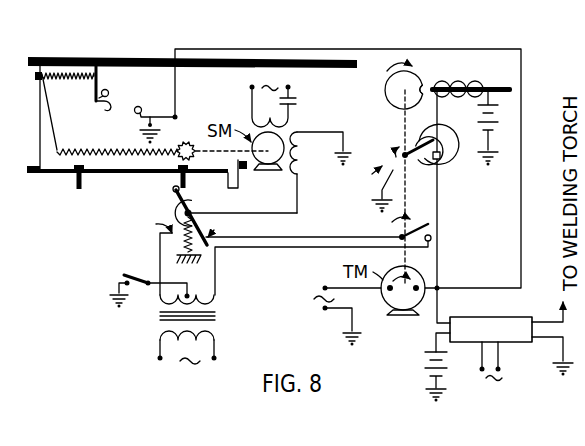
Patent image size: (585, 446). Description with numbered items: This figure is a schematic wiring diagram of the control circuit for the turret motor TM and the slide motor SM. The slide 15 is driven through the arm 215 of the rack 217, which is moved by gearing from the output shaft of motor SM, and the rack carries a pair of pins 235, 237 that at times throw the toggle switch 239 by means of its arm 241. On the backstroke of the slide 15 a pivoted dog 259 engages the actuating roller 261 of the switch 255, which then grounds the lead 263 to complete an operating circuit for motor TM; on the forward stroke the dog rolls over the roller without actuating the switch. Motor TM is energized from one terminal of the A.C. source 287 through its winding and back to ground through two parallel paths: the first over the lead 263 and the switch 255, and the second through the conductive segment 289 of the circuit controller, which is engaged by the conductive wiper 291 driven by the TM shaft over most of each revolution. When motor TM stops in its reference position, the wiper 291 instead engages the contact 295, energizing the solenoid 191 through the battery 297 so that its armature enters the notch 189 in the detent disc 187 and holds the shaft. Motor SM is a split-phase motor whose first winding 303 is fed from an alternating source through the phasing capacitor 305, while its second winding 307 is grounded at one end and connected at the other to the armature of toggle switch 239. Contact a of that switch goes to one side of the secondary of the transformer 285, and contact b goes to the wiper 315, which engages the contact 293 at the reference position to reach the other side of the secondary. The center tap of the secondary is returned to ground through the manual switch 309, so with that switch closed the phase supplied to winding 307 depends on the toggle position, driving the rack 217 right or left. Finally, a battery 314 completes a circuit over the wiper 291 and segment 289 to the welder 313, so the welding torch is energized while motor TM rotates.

The slide 15 is at (133, 58).
The lead 263 is at (242, 50).
The actuating roller 261 is at (141, 108).
The switch 255 is at (160, 110).
The pivoted dog 259 is at (103, 110).
The arm 215 is at (55, 128).
The rack 217 is at (117, 179).
The pin 235 is at (73, 183).
The pin 237 is at (187, 178).
The arm 241 is at (173, 189).
The toggle switch 239 is at (164, 209).
The manual switch 309 is at (124, 273).
The transformer 285 is at (154, 317).
The first winding 303 is at (251, 115).
The phasing capacitor 305 is at (296, 97).
The second winding 307 is at (300, 141).
The detent disc 187 is at (386, 94).
The notch 189 is at (423, 82).
The solenoid 191 is at (470, 82).
The conductive segment 289 is at (391, 137).
The conductive wiper 291 is at (434, 135).
The battery 297 is at (480, 123).
The contact 295 is at (438, 161).
The wiper 315 is at (425, 222).
The contact 293 is at (432, 238).
The A.C. source 287 is at (306, 296).
The welder 313 is at (470, 317).
The battery 314 is at (424, 360).